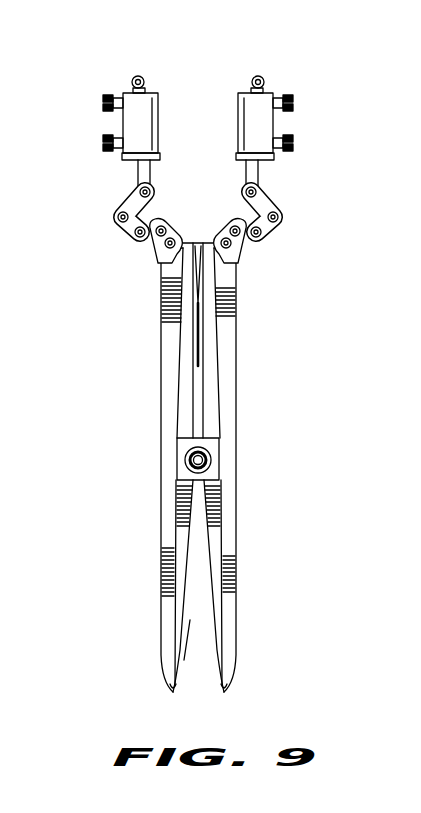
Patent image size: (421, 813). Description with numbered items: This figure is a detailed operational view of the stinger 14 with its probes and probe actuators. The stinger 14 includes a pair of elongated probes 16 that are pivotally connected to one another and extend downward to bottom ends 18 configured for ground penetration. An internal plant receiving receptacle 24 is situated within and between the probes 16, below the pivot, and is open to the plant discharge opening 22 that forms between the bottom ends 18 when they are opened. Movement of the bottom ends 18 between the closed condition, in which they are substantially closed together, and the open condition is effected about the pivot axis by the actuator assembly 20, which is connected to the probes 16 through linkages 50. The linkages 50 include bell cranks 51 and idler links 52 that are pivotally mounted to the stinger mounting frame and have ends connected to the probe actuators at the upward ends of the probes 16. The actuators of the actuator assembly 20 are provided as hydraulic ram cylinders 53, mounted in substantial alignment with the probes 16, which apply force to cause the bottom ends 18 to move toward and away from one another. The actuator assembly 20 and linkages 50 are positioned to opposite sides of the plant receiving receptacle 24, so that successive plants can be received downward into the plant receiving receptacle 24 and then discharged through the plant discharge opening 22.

The stinger 14 is at (240, 480).
The probes 16 is at (268, 340).
The bottom ends 18 is at (175, 690).
The actuator assembly 20 is at (200, 152).
The plant discharge opening 22 is at (198, 675).
The plant receiving receptacle 24 is at (197, 538).
The linkages 50 is at (200, 215).
The bell cranks 51 is at (118, 207).
The idler links 52 is at (150, 246).
The hydraulic ram cylinders 53 is at (257, 110).